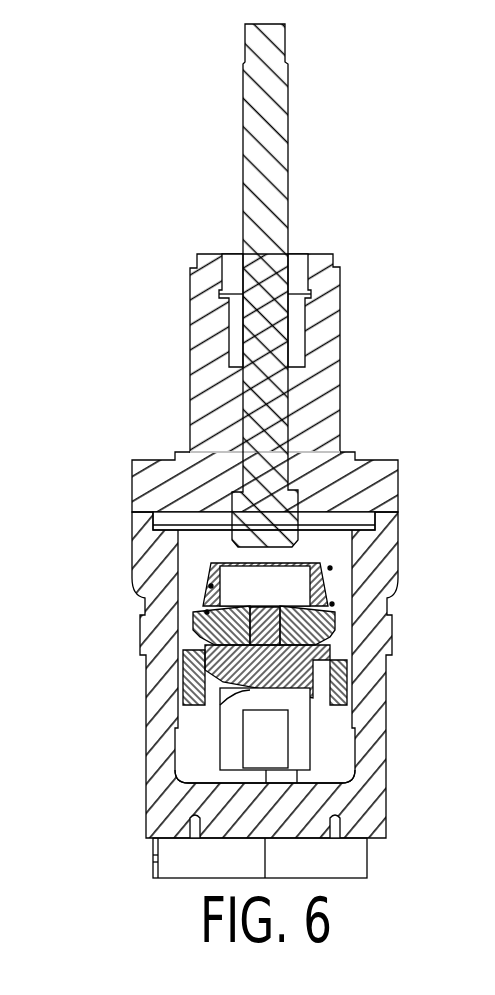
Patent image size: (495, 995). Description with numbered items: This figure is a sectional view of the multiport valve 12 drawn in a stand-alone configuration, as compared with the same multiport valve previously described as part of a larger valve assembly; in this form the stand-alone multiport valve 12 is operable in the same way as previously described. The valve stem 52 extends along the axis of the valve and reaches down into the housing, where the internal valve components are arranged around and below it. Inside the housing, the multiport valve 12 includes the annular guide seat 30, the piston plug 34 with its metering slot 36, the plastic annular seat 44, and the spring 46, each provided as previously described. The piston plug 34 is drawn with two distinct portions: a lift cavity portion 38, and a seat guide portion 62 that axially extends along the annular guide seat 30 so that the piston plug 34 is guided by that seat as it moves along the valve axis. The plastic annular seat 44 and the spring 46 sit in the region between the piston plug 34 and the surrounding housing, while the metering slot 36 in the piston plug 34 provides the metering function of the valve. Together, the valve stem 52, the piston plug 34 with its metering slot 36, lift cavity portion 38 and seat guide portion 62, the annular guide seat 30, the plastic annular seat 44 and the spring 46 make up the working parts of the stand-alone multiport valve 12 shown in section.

The multiport valve 12 is at (145, 337).
The valve stem 52 is at (250, 175).
The piston plug 34 is at (200, 573).
The spring 46 is at (330, 568).
The plastic annular seat 44 is at (335, 648).
The annular guide seat 30 is at (185, 643).
The metering slot 36 is at (232, 712).
The lift cavity portion 38 is at (293, 772).
The seat guide portion 62 is at (338, 770).